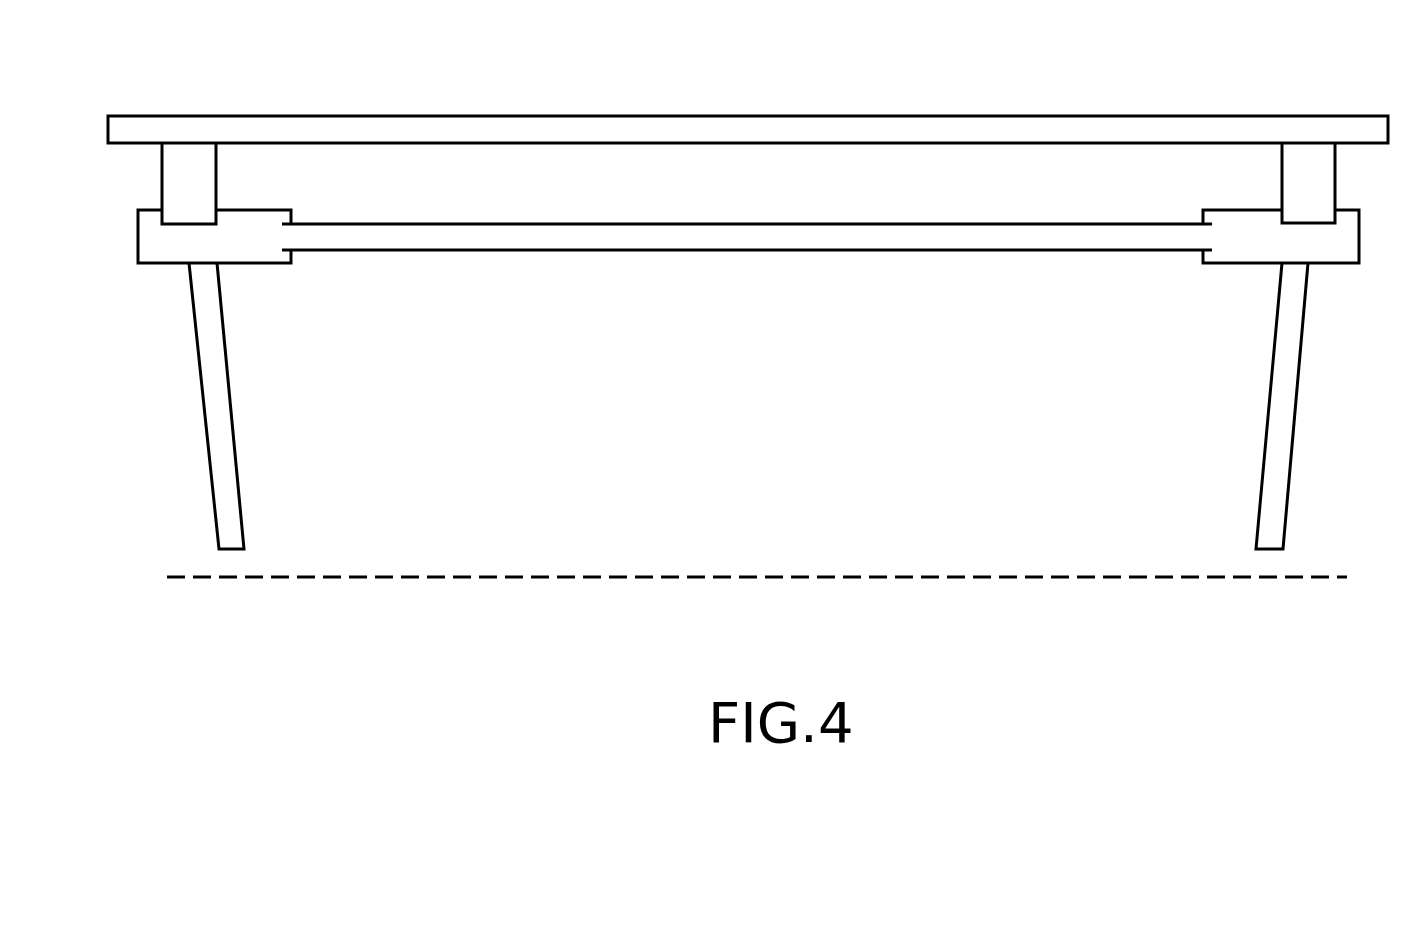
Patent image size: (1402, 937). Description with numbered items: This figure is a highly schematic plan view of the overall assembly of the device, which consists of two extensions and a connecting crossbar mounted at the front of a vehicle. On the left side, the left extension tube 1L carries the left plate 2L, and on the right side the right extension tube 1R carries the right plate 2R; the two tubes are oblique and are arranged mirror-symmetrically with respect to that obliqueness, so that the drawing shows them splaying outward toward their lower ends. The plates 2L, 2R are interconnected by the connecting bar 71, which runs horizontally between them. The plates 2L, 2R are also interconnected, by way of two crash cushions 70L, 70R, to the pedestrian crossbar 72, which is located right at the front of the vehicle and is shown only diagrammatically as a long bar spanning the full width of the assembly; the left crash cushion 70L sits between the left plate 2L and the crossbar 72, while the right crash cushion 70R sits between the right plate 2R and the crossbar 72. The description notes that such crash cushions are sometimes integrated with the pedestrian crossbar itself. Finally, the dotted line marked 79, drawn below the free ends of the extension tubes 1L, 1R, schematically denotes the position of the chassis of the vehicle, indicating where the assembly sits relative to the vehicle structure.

The pedestrian crossbar 72 is at (682, 118).
The connecting bar 71 is at (726, 250).
The left crash cushion 70L is at (216, 170).
The right crash cushion 70R is at (1282, 162).
The left plate 2L is at (250, 265).
The right plate 2R is at (1240, 265).
The left extension tube 1L is at (230, 453).
The right extension tube 1R is at (1266, 436).
The chassis position line 79 is at (820, 568).